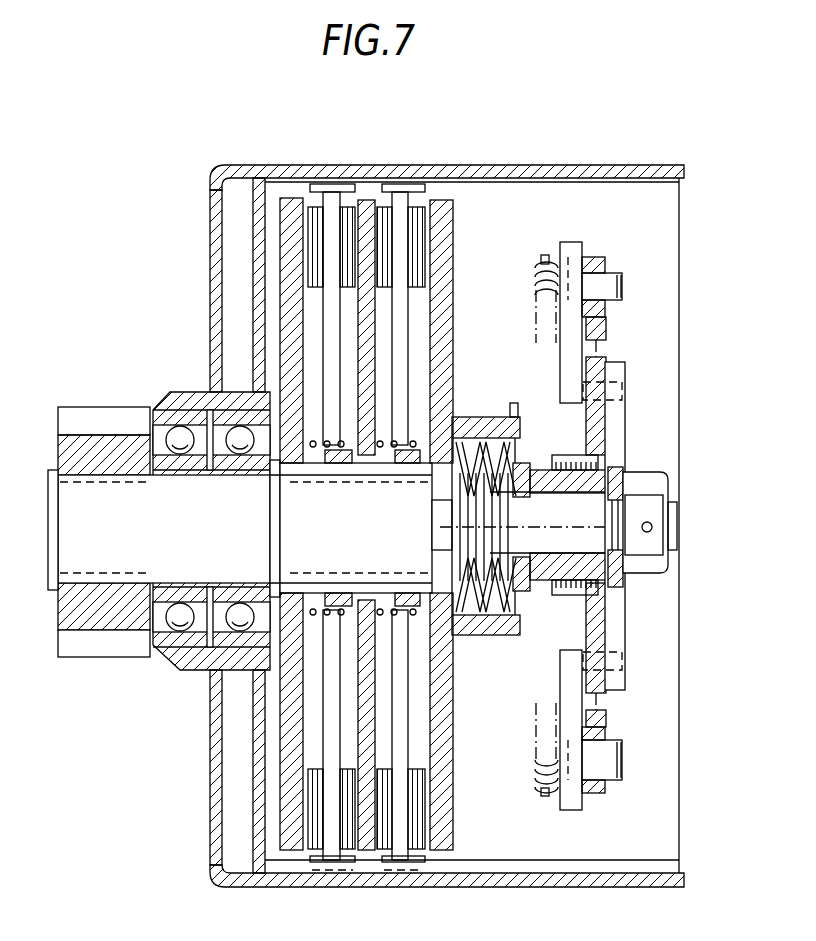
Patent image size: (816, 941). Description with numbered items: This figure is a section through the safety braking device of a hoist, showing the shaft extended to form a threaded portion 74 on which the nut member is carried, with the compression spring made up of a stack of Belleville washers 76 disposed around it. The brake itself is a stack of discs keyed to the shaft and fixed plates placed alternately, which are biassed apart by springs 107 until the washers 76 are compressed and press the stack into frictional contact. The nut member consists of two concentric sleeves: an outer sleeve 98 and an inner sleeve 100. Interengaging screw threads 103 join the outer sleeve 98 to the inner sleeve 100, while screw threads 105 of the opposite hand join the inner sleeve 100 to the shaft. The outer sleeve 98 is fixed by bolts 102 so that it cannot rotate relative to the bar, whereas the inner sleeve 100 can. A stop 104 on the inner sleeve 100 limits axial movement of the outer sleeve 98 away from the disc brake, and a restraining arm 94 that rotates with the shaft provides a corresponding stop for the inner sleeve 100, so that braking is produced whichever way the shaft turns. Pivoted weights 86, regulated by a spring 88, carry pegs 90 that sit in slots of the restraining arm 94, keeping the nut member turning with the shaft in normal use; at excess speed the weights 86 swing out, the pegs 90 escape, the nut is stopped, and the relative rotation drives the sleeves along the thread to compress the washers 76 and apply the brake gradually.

The threaded portion 74 is at (614, 515).
The Belleville washers 76 is at (487, 437).
The pivoted weight 86 is at (575, 242).
The spring 88 is at (533, 292).
The peg 90 is at (625, 383).
The restraining arm 94 is at (616, 428).
The outer sleeve 98 is at (547, 567).
The inner sleeve 100 is at (535, 470).
The bolts 102 is at (617, 597).
The screw threads 103 is at (558, 573).
The stop 104 is at (660, 562).
The screw threads 105 is at (605, 496).
The springs 107 is at (377, 443).